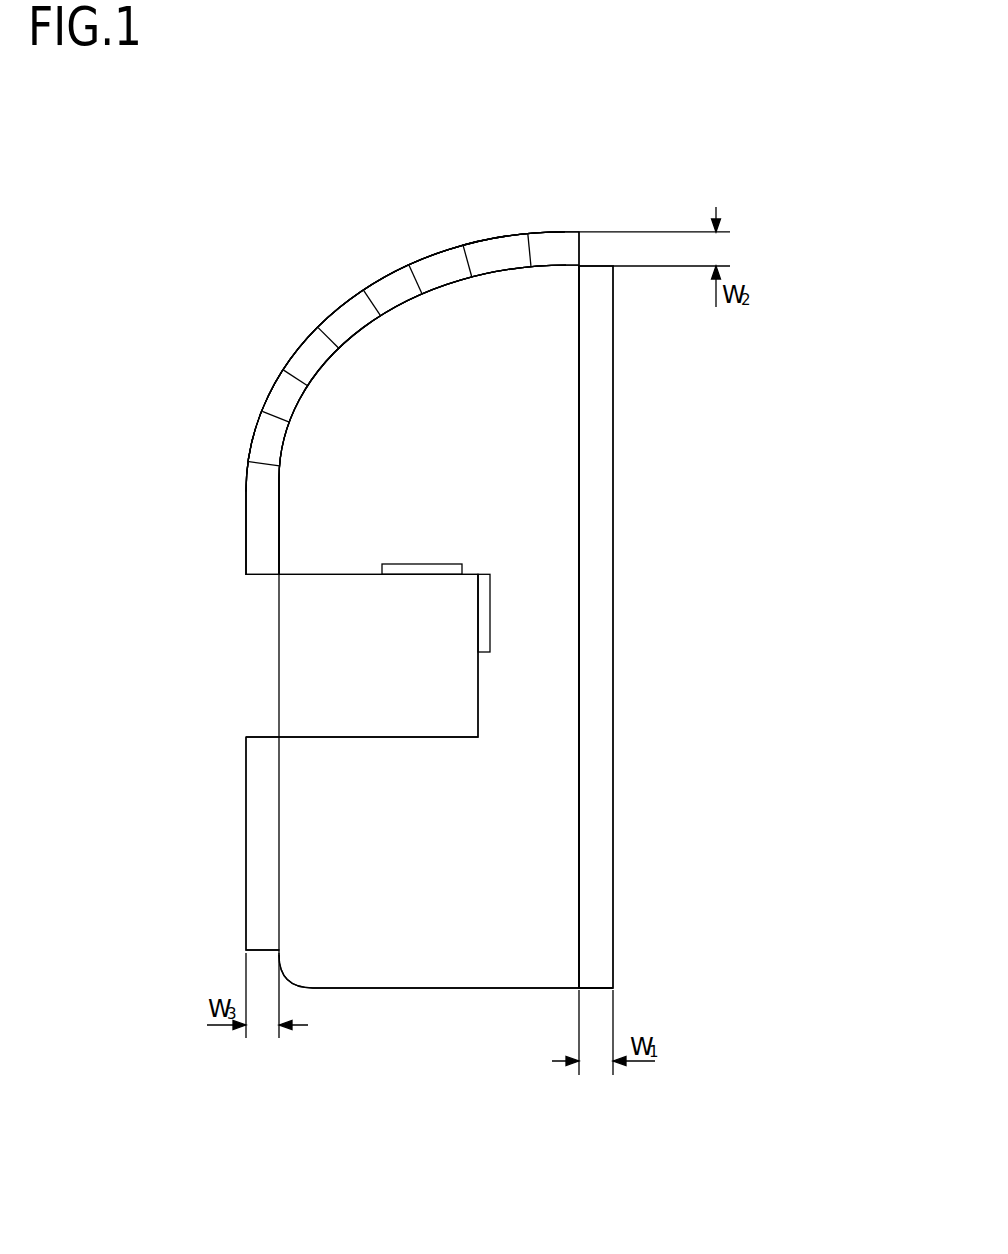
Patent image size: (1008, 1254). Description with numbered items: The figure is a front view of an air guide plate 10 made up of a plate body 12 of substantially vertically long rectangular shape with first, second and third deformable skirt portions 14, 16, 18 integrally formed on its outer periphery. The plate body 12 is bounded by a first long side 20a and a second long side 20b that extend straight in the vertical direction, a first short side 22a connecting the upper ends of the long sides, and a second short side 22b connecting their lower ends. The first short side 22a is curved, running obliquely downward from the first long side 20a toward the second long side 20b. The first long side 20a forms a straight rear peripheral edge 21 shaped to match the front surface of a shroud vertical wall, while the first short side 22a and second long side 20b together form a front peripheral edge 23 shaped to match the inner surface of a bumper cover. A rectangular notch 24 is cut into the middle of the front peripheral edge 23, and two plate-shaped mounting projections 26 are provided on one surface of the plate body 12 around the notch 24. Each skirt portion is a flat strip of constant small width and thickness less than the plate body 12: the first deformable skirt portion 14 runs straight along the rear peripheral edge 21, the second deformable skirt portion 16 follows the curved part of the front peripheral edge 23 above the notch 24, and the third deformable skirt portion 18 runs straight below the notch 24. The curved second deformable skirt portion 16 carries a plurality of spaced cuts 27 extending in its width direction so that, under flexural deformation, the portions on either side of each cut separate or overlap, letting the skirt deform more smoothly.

The air guide plate 10 is at (644, 200).
The plate body 12 is at (500, 401).
The first deformable skirt portion 14 is at (599, 580).
The second deformable skirt portion 16 is at (385, 261).
The third deformable skirt portion 18 is at (256, 850).
The rear peripheral edge 21 is at (579, 708).
The first long side 20a is at (664, 627).
The second long side 20b is at (279, 541).
The first short side 22a is at (384, 271).
The second short side 22b is at (406, 988).
The front peripheral edge 23 is at (100, 292).
The notch 24 is at (310, 575).
The mounting projections 26 is at (425, 570).
The cuts 27 is at (420, 290).